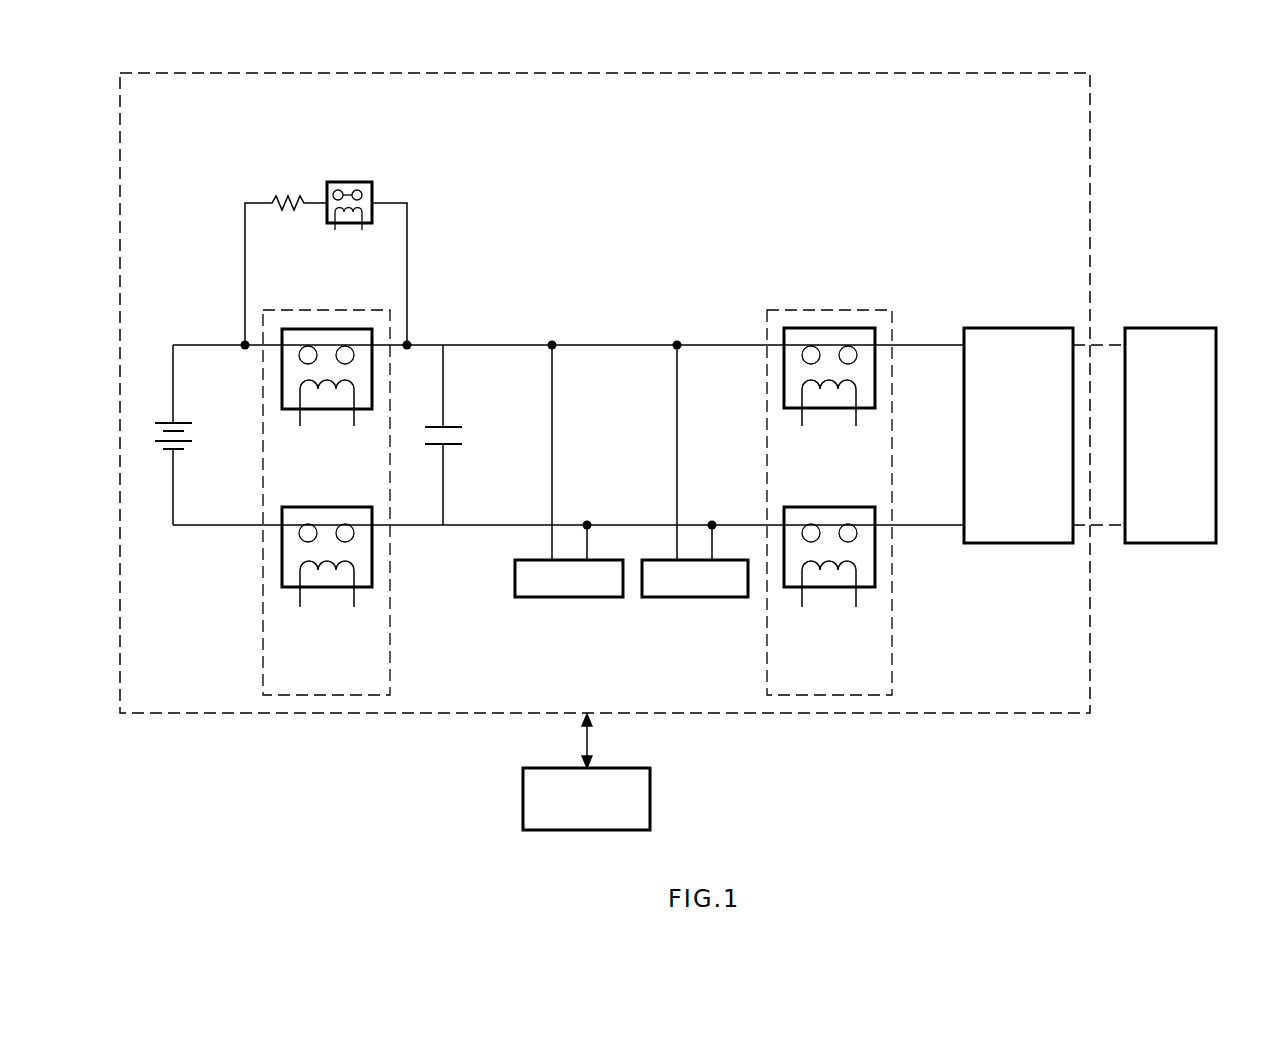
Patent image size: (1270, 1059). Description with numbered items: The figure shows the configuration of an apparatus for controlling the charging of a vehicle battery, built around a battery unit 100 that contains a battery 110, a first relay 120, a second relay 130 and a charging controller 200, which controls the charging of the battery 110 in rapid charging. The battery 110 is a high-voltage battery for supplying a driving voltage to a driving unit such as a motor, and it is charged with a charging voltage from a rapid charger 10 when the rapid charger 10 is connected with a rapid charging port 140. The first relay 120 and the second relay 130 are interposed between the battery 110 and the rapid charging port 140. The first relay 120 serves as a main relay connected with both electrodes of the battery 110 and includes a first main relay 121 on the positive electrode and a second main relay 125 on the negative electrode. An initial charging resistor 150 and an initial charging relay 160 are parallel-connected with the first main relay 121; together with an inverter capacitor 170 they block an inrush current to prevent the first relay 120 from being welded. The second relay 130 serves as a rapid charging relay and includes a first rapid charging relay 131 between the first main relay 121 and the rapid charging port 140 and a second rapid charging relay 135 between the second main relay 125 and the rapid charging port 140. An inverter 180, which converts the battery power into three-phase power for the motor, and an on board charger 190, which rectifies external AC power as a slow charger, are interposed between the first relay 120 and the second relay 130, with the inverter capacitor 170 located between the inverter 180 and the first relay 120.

The battery unit 100 is at (585, 73).
The rapid charger 10 is at (1168, 545).
The battery 110 is at (163, 462).
The first relay 120 is at (336, 502).
The first main relay 121 is at (282, 366).
The second main relay 125 is at (282, 546).
The second relay 130 is at (867, 502).
The first rapid charging relay 131 is at (876, 366).
The second rapid charging relay 135 is at (876, 546).
The rapid charging port 140 is at (1016, 545).
The initial charging resistor 150 is at (282, 180).
The initial charging relay 160 is at (392, 186).
The inverter capacitor 170 is at (465, 413).
The inverter 180 is at (570, 598).
The on board charger 190 is at (690, 598).
The charging controller 200 is at (652, 796).